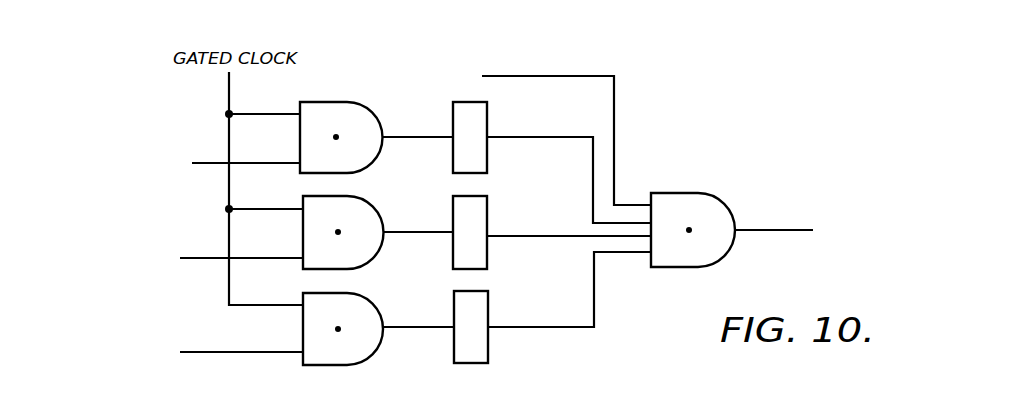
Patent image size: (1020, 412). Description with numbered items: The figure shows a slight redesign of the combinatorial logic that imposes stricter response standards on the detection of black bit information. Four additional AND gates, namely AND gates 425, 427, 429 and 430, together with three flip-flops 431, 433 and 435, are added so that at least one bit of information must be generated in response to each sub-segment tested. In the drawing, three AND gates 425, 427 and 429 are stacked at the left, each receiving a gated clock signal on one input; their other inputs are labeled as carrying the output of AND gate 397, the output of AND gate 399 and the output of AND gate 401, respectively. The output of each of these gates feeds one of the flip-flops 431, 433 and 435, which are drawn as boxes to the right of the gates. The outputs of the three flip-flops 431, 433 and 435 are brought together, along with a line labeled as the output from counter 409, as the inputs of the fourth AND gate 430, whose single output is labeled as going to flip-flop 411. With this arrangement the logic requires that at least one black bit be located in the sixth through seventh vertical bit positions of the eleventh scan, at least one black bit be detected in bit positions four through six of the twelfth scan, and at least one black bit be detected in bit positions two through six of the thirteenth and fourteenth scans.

The AND gate 397 output 397 is at (176, 164).
The AND gate 399 output 399 is at (174, 260).
The AND gate 401 output 401 is at (174, 353).
The counter 409 output 409 is at (582, 127).
The flip-flop 411 is at (824, 230).
The AND gate 425 is at (342, 102).
The AND gate 427 is at (355, 196).
The AND gate 429 is at (366, 293).
The AND gate 430 is at (703, 193).
The flip-flop 431 is at (487, 120).
The flip-flop 433 is at (487, 212).
The flip-flop 435 is at (488, 306).